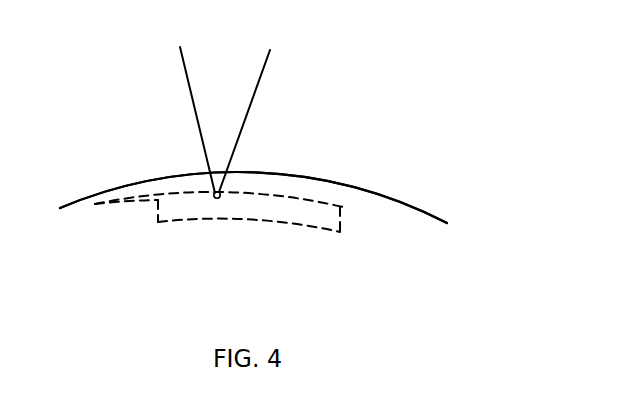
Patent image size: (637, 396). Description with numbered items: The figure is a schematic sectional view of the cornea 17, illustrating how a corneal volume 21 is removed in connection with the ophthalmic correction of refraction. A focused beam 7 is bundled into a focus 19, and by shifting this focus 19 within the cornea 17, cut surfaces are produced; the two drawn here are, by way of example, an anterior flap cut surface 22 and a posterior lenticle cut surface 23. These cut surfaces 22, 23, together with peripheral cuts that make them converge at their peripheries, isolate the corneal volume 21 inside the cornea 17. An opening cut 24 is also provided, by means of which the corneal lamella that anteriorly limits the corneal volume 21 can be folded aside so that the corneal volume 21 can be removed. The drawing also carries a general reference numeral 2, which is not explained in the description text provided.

The optical element / object 2 is at (124, 156).
The focused beam 7 is at (257, 85).
The cornea 17 is at (370, 188).
The focus 19 is at (217, 198).
The corneal volume 21 is at (340, 222).
The anterior flap cut surface 22 is at (286, 197).
The posterior lenticle cut surface 23 is at (247, 220).
The opening cut 24 is at (93, 200).